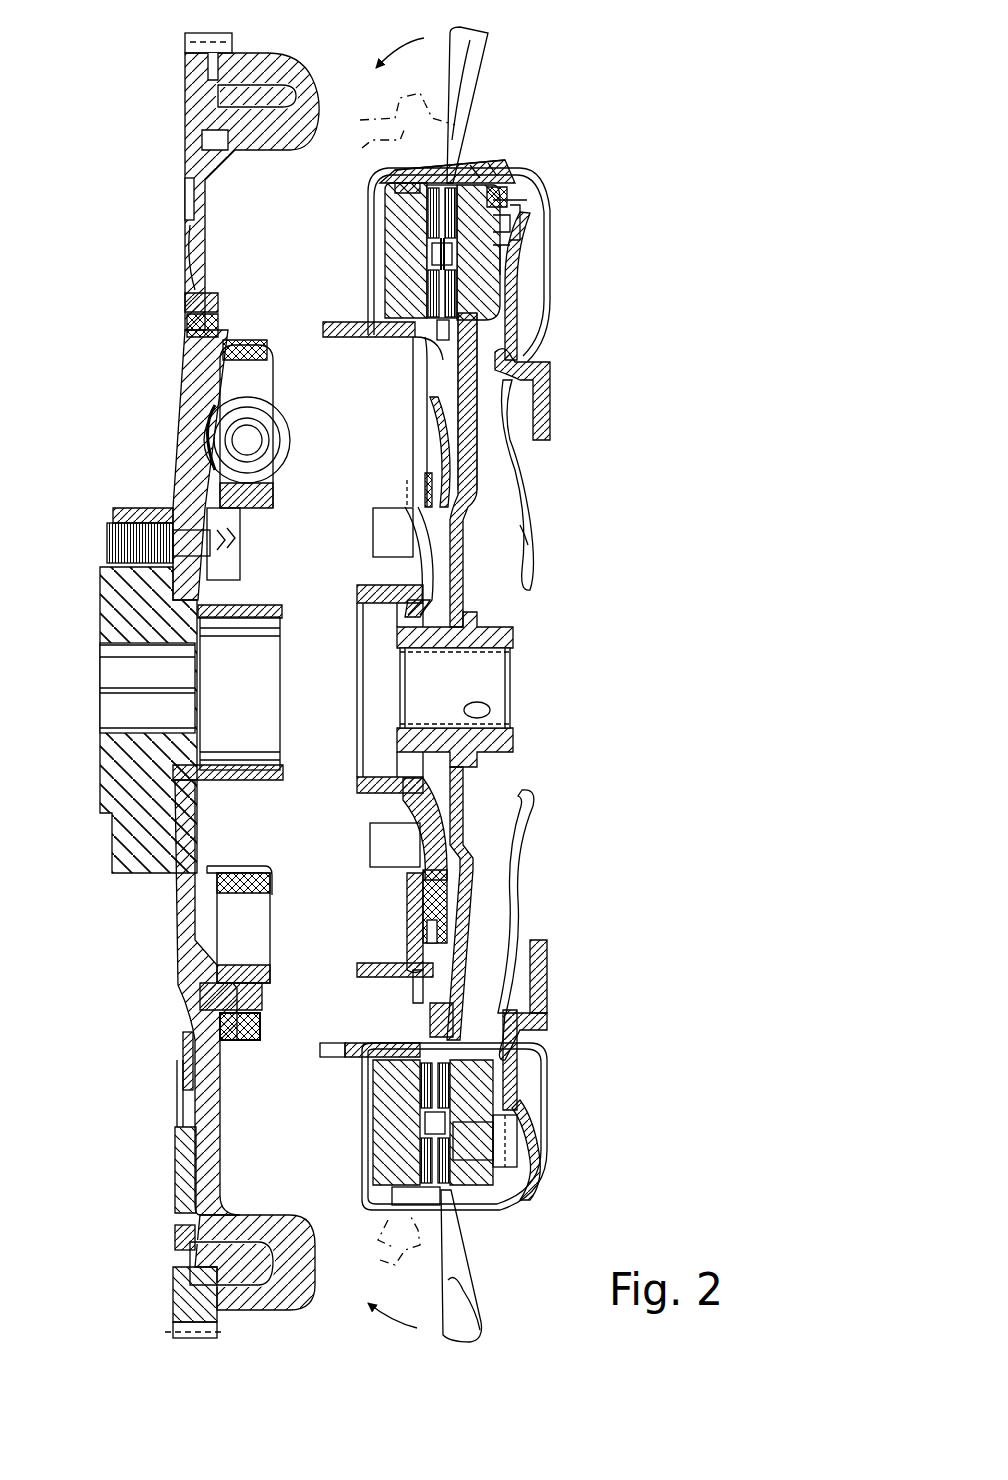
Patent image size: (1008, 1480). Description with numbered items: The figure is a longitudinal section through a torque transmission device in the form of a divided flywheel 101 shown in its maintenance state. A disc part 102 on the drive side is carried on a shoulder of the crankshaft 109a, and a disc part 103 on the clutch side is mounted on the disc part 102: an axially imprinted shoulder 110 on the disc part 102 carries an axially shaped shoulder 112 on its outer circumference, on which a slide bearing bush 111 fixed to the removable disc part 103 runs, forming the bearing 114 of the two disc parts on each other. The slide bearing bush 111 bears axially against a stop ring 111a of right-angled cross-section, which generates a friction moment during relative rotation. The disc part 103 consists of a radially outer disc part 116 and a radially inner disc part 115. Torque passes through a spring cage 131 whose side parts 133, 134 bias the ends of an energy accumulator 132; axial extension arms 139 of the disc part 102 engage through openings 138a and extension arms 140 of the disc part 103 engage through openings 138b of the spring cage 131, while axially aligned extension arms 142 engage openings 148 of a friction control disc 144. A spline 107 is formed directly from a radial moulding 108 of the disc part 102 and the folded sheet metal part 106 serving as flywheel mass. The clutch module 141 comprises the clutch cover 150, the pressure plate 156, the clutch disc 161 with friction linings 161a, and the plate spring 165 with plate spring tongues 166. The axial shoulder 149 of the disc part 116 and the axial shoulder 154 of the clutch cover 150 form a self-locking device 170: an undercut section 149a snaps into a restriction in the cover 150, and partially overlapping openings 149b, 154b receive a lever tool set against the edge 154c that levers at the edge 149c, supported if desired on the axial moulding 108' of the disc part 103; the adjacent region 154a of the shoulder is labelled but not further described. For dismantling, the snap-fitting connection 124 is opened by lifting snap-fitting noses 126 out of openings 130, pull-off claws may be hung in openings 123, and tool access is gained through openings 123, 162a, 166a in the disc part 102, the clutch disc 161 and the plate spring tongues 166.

The flywheel 101 is at (580, 74).
The disc part on the drive side 102 is at (190, 396).
The disc part on the clutch side 103 is at (445, 452).
The folded sheet metal part 106 is at (180, 1283).
The spline 107 is at (178, 1327).
The radial moulding 108 is at (260, 1284).
The axial moulding 108' is at (374, 82).
The crankshaft 109a is at (113, 770).
The shoulder 110 is at (273, 608).
The slide bearing bush 111 is at (397, 655).
The stop ring 111a is at (300, 585).
The axially shaped shoulder 112 is at (393, 628).
The bearing 114 is at (360, 617).
The radially inner disc part 115 is at (440, 880).
The radially outer disc part 116 is at (432, 420).
The openings 123 is at (420, 543).
The snap-fitting connection 124 is at (393, 873).
The snap-fitting noses 126 is at (378, 862).
The openings 130 is at (240, 868).
The spring cage 131 is at (278, 360).
The energy accumulator 132 is at (203, 445).
The side part 133 is at (212, 503).
The side part 134 is at (272, 492).
The openings 138a is at (270, 993).
The openings 138b is at (312, 953).
The extension arms 139 is at (243, 992).
The extension arms 140 is at (377, 960).
The clutch module 141 is at (553, 1087).
The axially aligned extension arms 142 is at (357, 340).
The friction control disc 144 is at (200, 310).
The openings 148 is at (192, 330).
The axial shoulder 149 is at (480, 160).
The undercut section 149a is at (493, 167).
The openings 149b is at (465, 150).
The edge 149c is at (487, 190).
The clutch cover 150 is at (518, 1195).
The axial shoulder 154 is at (393, 178).
The plate portion 154a is at (483, 177).
The openings 154b is at (427, 185).
The edge 154c is at (435, 135).
The pressure plate 156 is at (390, 287).
The clutch disc 161 is at (482, 488).
The friction linings 161a is at (450, 297).
The opening 162a is at (465, 560).
The plate spring 165 is at (510, 1060).
The plate spring tongues 166 is at (507, 432).
The openings 166a is at (525, 535).
The self-locking device 170 is at (466, 148).